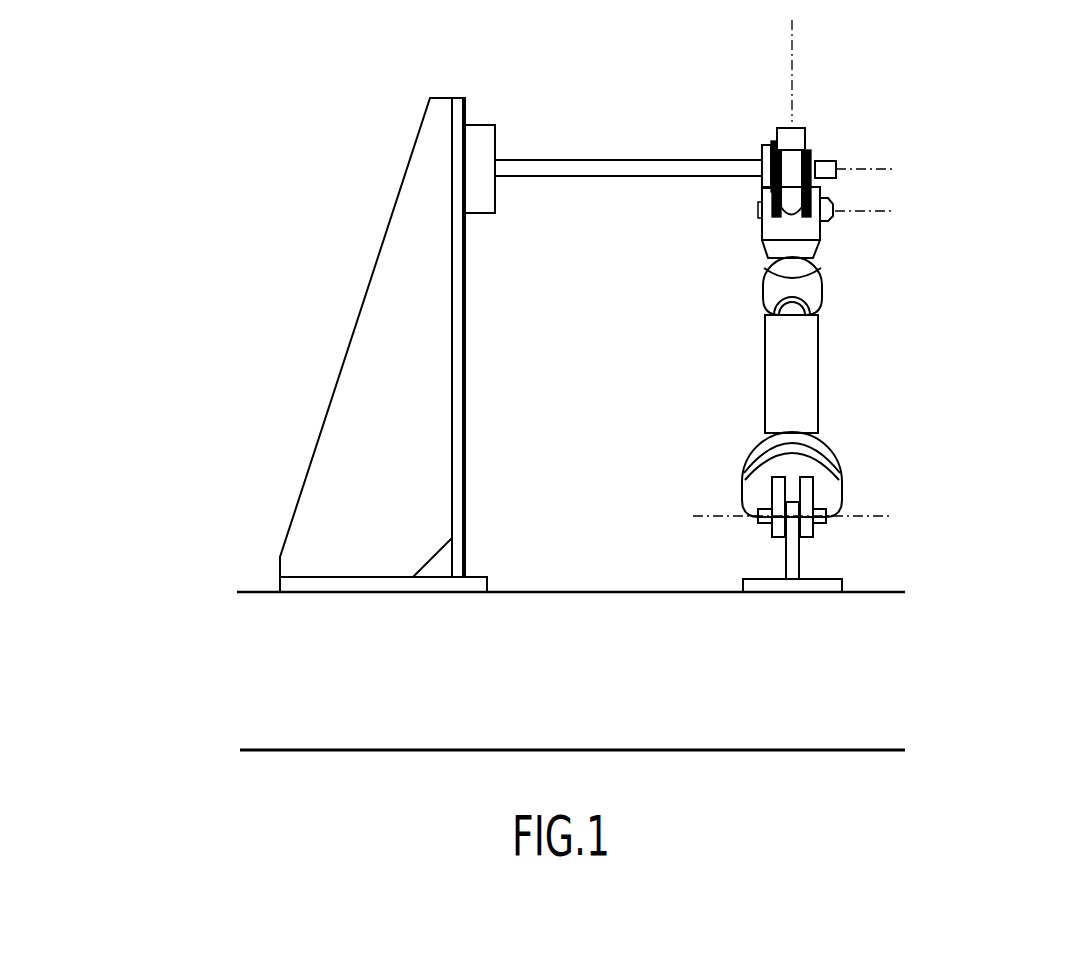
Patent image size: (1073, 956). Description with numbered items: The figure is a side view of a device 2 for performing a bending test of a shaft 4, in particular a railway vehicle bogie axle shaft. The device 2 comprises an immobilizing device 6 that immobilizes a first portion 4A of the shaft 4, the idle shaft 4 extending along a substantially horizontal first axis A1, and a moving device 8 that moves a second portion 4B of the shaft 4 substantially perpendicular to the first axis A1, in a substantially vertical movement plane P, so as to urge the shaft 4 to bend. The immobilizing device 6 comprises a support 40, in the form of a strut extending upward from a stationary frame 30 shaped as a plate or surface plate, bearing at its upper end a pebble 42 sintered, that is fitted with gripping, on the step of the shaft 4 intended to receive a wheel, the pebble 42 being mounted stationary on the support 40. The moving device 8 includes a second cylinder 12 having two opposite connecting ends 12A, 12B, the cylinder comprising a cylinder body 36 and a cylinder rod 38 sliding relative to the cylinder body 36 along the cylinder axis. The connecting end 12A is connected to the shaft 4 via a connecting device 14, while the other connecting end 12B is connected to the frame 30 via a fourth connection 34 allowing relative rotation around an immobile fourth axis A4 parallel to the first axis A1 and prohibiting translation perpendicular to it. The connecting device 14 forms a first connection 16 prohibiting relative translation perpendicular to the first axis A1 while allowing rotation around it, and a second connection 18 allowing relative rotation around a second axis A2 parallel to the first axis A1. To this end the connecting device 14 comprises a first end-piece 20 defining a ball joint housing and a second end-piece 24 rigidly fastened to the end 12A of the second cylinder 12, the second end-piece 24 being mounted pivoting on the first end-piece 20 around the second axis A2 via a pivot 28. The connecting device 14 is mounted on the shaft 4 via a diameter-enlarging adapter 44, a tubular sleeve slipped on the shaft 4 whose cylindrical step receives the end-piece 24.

The device 2 is at (284, 136).
The shaft 4 is at (690, 164).
The first portion of the shaft 4A is at (500, 178).
The second portion of the shaft 4B is at (834, 162).
The immobilizing device 6 is at (383, 334).
The moving device 8 is at (828, 421).
The second cylinder 12 is at (796, 412).
The connecting end of the second cylinder 12A is at (783, 282).
The other connecting end of the second cylinder 12B is at (805, 538).
The connecting device 14 is at (858, 158).
The first connection 16 is at (829, 142).
The second connection 18 is at (874, 190).
The first end-piece 20 is at (793, 131).
The second end-piece 24 is at (767, 220).
The pivot 28 is at (827, 220).
The stationary frame 30 is at (610, 617).
The fourth connection 34 is at (742, 527).
The cylinder body 36 is at (808, 404).
The cylinder rod 38 is at (806, 303).
The support 40 is at (398, 212).
The pebble 42 is at (480, 127).
The diameter-enlarging adapter 44 is at (763, 152).
The first axis A1 is at (870, 168).
The second axis A2 is at (870, 212).
The fourth axis A4 is at (878, 517).
The movement plane P is at (793, 28).